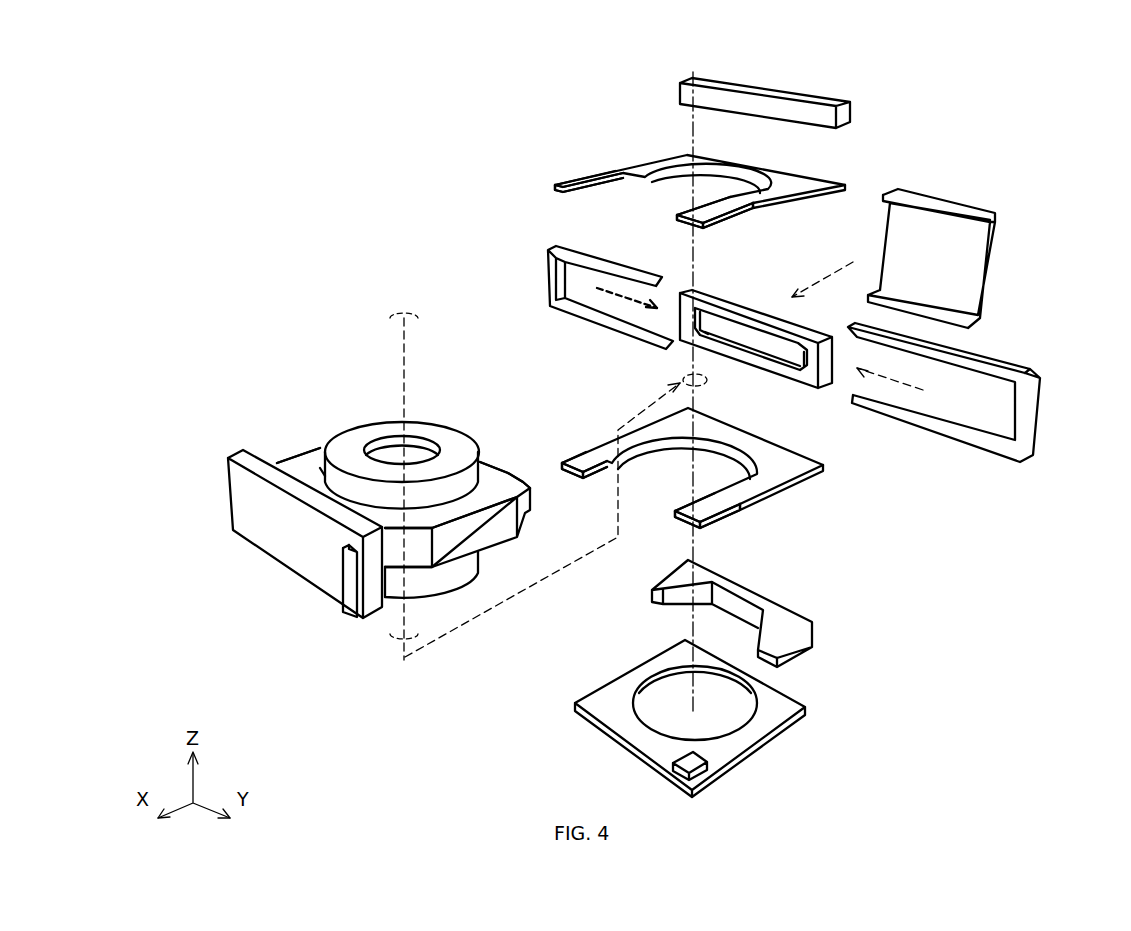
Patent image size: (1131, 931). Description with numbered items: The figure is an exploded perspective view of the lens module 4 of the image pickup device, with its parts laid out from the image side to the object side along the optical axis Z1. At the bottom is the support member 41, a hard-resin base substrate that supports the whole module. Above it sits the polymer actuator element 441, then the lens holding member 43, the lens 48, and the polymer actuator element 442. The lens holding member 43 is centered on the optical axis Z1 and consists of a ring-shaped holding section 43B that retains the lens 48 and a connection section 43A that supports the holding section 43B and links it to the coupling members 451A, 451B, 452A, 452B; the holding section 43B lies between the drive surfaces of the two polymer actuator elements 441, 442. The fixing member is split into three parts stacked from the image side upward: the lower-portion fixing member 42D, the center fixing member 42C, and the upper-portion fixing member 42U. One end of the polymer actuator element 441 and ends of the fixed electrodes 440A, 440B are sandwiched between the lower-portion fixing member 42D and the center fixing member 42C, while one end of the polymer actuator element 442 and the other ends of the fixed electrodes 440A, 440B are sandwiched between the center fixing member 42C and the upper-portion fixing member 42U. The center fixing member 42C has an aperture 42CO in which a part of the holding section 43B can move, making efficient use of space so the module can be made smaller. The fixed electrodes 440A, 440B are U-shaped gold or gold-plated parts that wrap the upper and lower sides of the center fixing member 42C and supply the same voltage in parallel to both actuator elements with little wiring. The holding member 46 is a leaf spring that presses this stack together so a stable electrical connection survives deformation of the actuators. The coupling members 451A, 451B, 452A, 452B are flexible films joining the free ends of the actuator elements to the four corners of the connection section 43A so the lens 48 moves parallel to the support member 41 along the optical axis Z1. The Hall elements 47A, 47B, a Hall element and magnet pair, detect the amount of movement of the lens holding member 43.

The lens module 4 is at (1061, 97).
The support member 41 is at (776, 706).
The upper-portion fixing member 42U is at (808, 95).
The lower-portion fixing member 42D is at (800, 636).
The center fixing member 42C is at (705, 352).
The aperture 42CO is at (735, 338).
The lens holding member 43 is at (365, 508).
The connection section 43A is at (248, 457).
The holding section 43B is at (298, 458).
The holding member 46 is at (973, 262).
The Hall element 47A is at (693, 764).
The Hall element (magnet) 47B is at (345, 588).
The lens 48 is at (388, 447).
The fixed electrode 440A is at (552, 262).
The fixed electrode 440B is at (1020, 372).
The polymer actuator element 441 is at (792, 458).
The polymer actuator element 442 is at (833, 186).
The coupling member 451A is at (590, 462).
The coupling member 451B is at (710, 515).
The coupling member 452A is at (572, 184).
The coupling member 452B is at (710, 212).
The optical axis Z1 is at (693, 374).